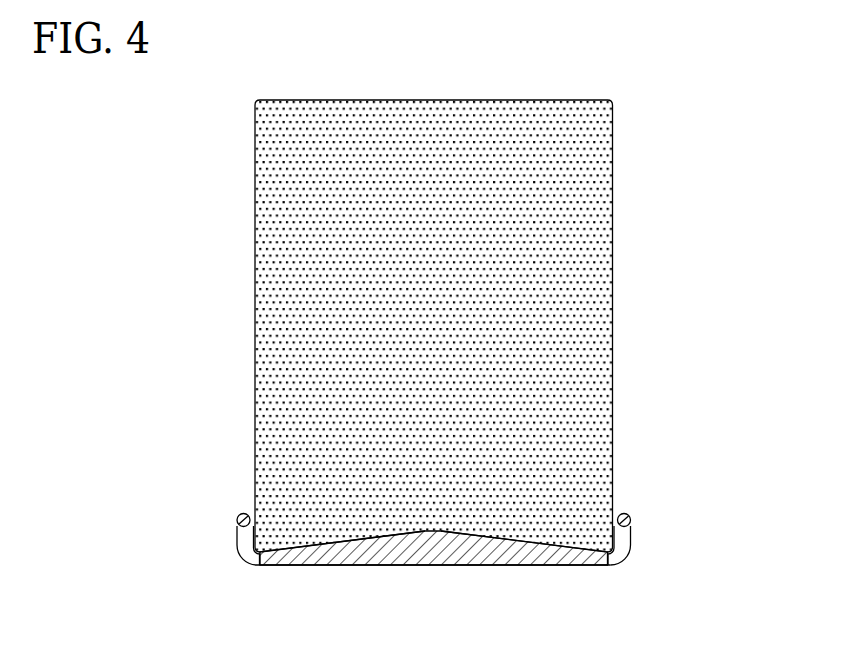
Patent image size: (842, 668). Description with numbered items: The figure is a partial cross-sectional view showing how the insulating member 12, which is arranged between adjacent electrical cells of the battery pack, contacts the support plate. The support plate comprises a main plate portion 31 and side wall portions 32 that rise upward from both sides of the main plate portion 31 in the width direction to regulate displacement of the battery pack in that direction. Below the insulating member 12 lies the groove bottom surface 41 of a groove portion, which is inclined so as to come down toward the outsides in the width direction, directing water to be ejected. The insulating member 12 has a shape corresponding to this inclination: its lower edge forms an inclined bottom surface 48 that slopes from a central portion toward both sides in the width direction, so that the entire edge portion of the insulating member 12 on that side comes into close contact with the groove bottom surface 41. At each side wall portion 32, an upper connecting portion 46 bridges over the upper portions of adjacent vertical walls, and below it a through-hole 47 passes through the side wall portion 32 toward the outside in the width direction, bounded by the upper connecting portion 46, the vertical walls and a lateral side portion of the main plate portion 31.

The insulating member 12 is at (613, 233).
The main plate portion 31 is at (432, 565).
The side wall portion 32 is at (237, 535).
The groove bottom surface 41 is at (550, 547).
The upper connecting portion 46 is at (238, 514).
The through-hole 47 is at (242, 546).
The inclined bottom surface 48 is at (352, 542).